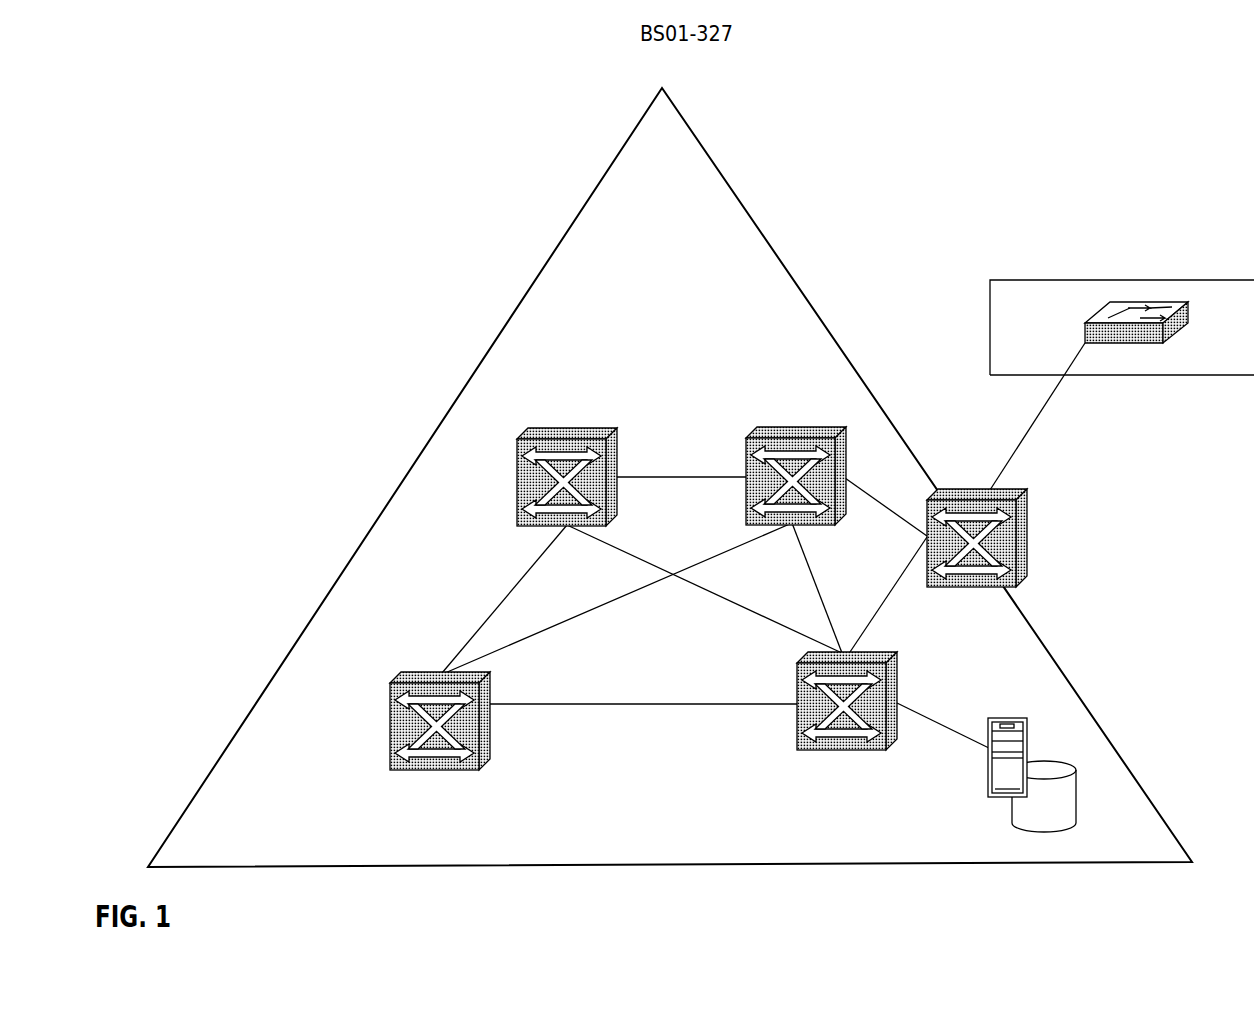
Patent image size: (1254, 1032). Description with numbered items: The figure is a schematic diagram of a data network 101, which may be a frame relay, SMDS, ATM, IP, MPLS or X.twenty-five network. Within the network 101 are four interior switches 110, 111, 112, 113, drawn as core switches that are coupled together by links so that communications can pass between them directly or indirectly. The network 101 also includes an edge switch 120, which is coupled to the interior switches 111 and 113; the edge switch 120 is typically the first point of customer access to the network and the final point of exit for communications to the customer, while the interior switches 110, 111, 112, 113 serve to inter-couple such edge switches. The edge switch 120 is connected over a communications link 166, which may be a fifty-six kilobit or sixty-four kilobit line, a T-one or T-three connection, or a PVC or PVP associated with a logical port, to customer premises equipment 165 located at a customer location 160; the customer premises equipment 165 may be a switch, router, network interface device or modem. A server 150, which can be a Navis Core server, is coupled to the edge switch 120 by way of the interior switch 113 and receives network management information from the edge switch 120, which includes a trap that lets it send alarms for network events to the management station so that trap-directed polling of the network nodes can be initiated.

The network 101 is at (567, 228).
The interior switch 110 is at (544, 428).
The interior switch 111 is at (777, 425).
The interior switch 112 is at (413, 672).
The interior switch 113 is at (797, 677).
The edge switch 120 is at (1028, 515).
The server 150 is at (993, 797).
The customer location 160 is at (990, 280).
The customer premises equipment 165 is at (1085, 323).
The communications link 166 is at (1050, 395).